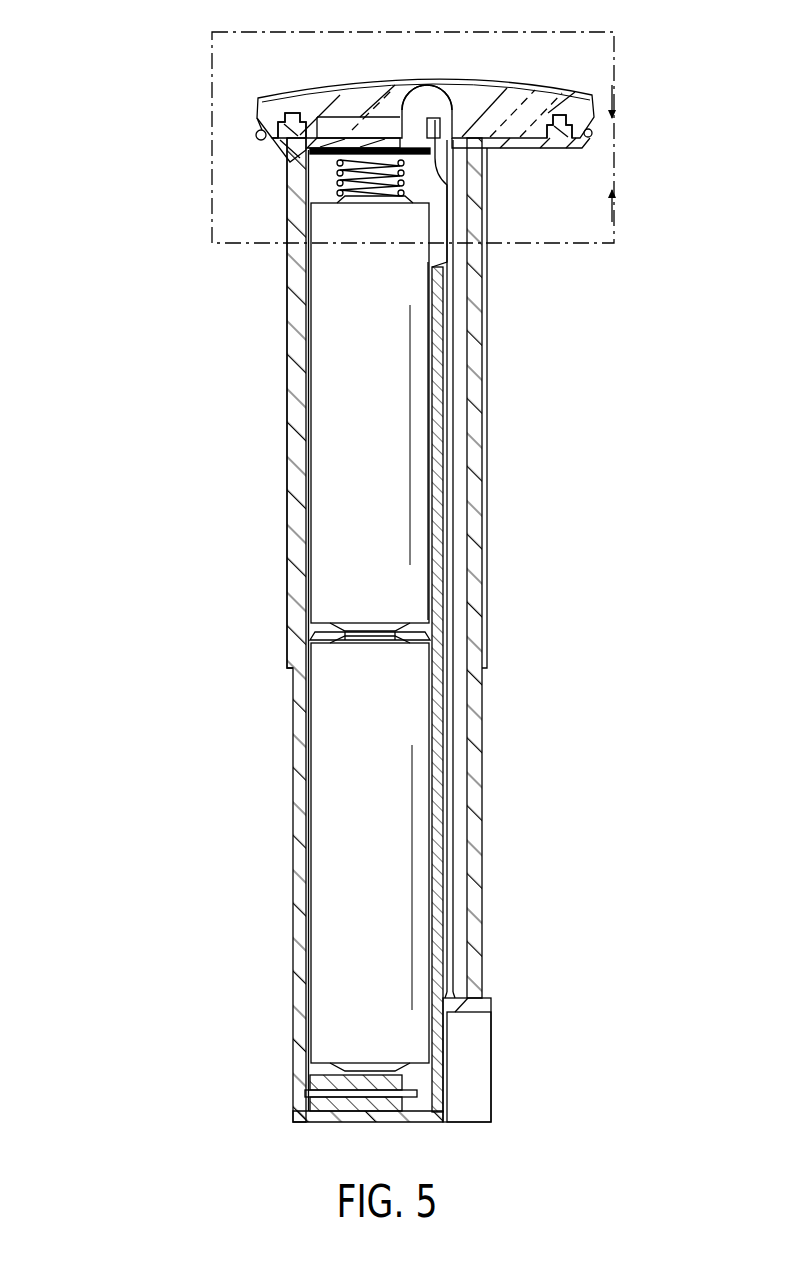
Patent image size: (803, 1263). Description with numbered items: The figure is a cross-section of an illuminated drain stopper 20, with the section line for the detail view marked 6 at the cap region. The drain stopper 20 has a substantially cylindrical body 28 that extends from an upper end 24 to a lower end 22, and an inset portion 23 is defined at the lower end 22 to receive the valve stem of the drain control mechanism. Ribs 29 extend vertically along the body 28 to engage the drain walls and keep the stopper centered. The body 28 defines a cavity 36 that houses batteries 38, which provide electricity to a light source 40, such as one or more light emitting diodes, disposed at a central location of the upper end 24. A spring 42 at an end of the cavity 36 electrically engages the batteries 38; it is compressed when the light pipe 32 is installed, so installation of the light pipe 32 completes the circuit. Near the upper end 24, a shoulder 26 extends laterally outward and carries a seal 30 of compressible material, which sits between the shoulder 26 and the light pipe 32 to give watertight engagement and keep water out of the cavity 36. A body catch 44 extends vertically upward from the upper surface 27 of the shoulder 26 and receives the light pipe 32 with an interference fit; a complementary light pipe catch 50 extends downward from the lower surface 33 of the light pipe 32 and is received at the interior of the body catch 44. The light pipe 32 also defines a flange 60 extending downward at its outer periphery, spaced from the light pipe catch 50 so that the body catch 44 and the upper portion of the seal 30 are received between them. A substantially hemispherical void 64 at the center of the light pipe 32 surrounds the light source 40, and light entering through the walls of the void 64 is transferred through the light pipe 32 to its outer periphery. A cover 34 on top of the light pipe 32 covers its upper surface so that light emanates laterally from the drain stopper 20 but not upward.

The drain stopper 20 is at (160, 50).
The lower end 22 is at (258, 1108).
The inset portion 23 is at (473, 1057).
The upper end 24 is at (206, 117).
The shoulder 26 is at (535, 150).
The upper surface 27 is at (520, 130).
The body 28 is at (293, 752).
The ribs 29 is at (287, 407).
The seal 30 is at (578, 150).
The light pipe 32 is at (490, 128).
The lower surface 33 is at (330, 128).
The cover 34 is at (425, 82).
The cavity 36 is at (318, 633).
The batteries 38 is at (346, 318).
The light source 40 is at (440, 191).
The spring 42 is at (360, 177).
The body catch 44 is at (278, 120).
The light pipe catch 50 is at (287, 138).
The flange 60 is at (597, 139).
The void 64 is at (424, 96).
The section line 6 is at (625, 153).